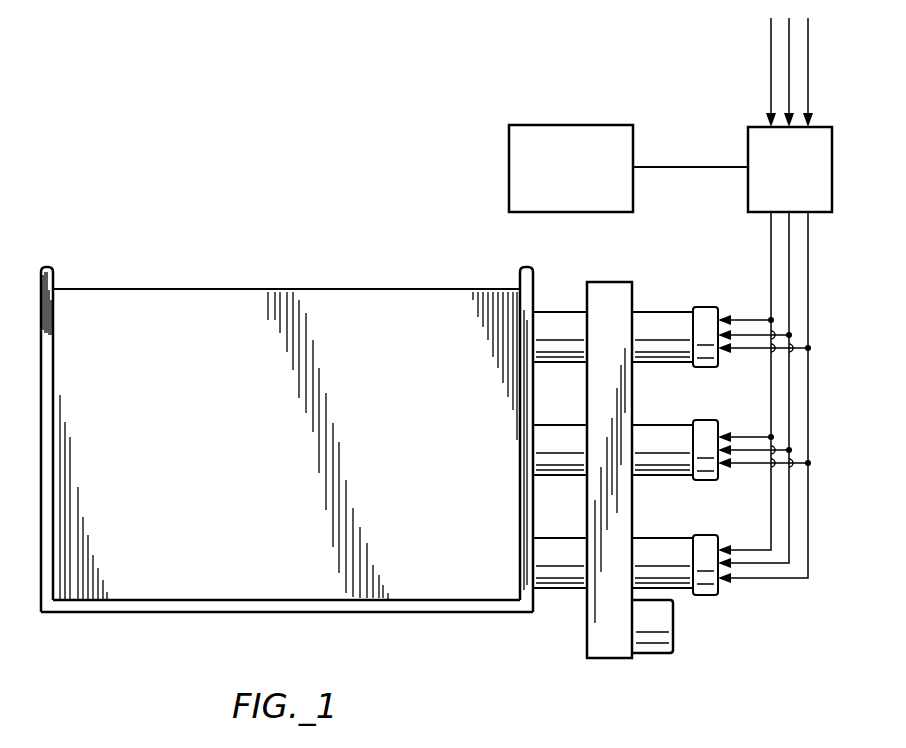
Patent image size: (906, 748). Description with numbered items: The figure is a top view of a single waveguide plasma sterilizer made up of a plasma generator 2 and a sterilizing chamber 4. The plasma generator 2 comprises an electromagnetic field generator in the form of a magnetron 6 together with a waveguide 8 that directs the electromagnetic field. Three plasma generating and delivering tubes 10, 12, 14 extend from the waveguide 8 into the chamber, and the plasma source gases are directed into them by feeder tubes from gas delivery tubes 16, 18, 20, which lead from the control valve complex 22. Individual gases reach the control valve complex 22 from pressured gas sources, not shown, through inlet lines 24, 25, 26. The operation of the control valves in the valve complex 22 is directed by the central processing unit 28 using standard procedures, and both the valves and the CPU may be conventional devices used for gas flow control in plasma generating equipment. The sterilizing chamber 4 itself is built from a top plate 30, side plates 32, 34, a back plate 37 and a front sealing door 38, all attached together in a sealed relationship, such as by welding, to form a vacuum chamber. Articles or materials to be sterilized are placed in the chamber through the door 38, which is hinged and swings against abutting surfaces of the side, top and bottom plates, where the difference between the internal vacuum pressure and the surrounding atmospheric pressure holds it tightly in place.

The plasma generator 2 is at (660, 292).
The sterilizing chamber 4 is at (322, 266).
The magnetron 6 is at (673, 630).
The waveguide 8 is at (587, 638).
The plasma generating and delivering tube 10 is at (668, 312).
The plasma generating and delivering tube 12 is at (663, 425).
The plasma generating and delivering tube 14 is at (660, 538).
The gas delivery tube 16 is at (771, 236).
The gas delivery tube 18 is at (789, 258).
The gas delivery tube 20 is at (808, 236).
The control valve complex 22 is at (748, 138).
The inlet line 24 is at (771, 43).
The inlet line 25 is at (789, 68).
The inlet line 26 is at (808, 30).
The central processing unit 28 is at (509, 160).
The top plate 30 is at (262, 320).
The side plate 32 is at (42, 568).
The side plate 34 is at (532, 288).
The back plate 37 is at (180, 288).
The front sealing door 38 is at (250, 612).